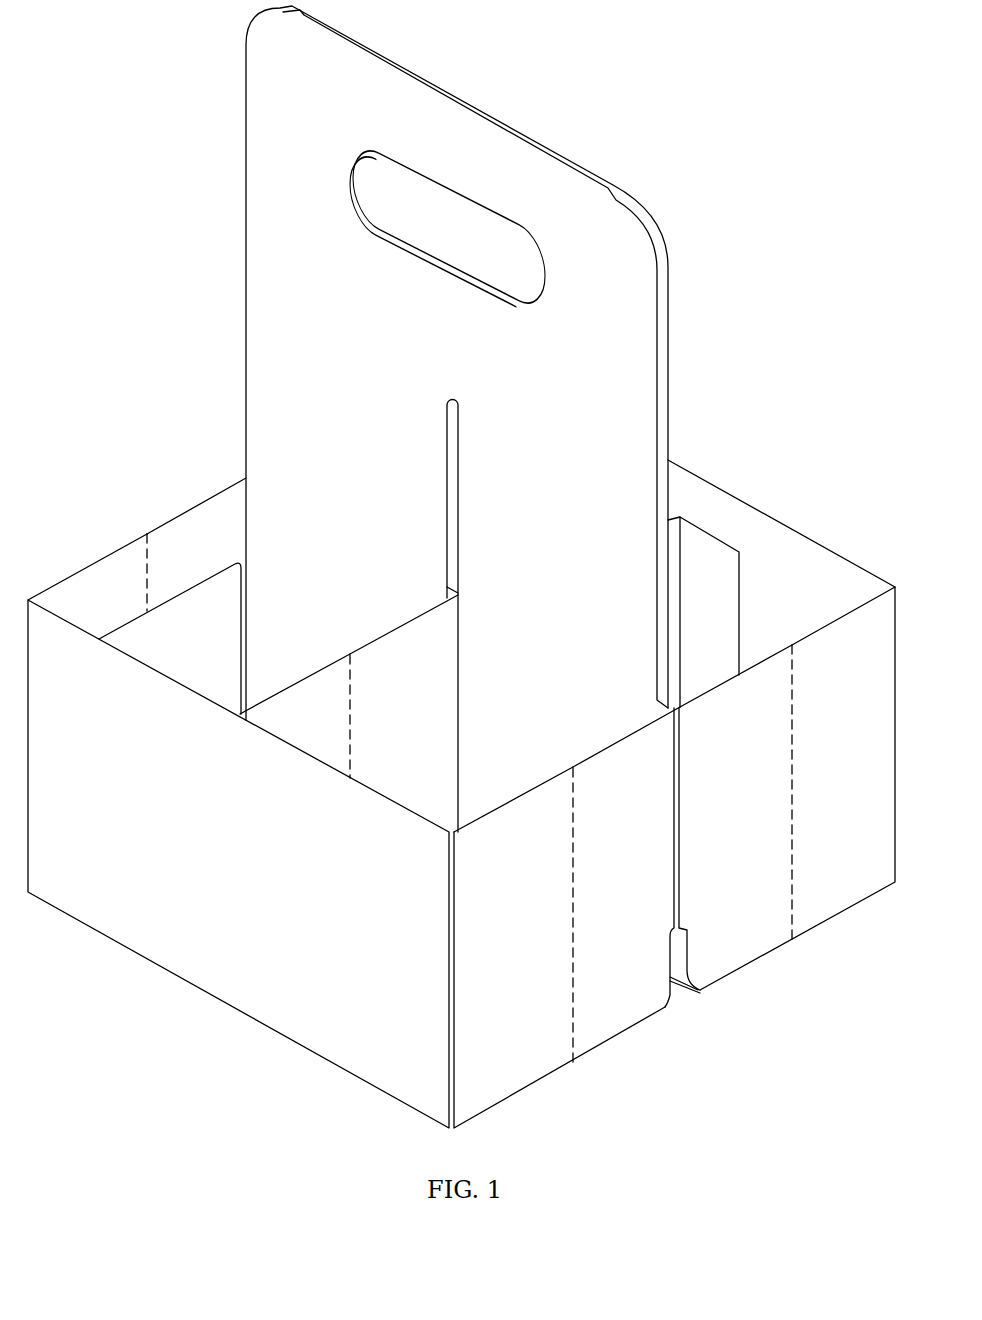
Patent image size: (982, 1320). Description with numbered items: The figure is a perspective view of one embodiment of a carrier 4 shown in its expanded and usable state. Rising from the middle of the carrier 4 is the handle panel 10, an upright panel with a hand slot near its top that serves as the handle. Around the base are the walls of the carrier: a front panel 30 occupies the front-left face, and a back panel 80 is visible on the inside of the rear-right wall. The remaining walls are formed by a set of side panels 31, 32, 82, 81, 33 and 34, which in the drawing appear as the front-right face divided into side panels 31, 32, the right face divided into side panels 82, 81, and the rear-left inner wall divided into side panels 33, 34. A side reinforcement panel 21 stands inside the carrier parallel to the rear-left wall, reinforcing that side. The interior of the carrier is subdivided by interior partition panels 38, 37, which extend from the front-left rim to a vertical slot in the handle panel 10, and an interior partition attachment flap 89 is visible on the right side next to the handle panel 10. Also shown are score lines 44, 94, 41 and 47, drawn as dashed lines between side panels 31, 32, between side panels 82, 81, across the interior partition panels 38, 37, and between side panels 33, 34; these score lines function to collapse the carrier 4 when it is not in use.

The carrier 4 is at (787, 323).
The handle panel 10 is at (366, 356).
The side reinforcement panel 21 is at (199, 645).
The front panel 30 is at (226, 865).
The side panel 31 is at (533, 945).
The side panel 32 is at (640, 884).
The side panel 33 is at (120, 615).
The side panel 34 is at (210, 567).
The interior partition panel 37 is at (418, 685).
The interior partition panel 38 is at (325, 735).
The score line 41 is at (350, 767).
The score line 44 is at (573, 1019).
The score line 47 is at (147, 555).
The back panel 80 is at (811, 607).
The side panel 81 is at (861, 759).
The side panel 82 is at (750, 822).
The interior partition attachment flap 89 is at (720, 619).
The score line 94 is at (792, 900).